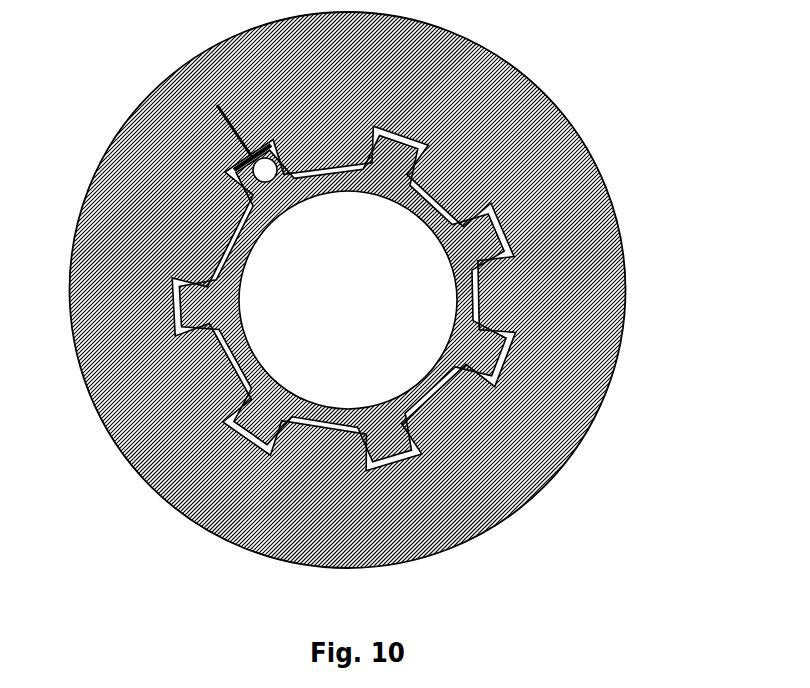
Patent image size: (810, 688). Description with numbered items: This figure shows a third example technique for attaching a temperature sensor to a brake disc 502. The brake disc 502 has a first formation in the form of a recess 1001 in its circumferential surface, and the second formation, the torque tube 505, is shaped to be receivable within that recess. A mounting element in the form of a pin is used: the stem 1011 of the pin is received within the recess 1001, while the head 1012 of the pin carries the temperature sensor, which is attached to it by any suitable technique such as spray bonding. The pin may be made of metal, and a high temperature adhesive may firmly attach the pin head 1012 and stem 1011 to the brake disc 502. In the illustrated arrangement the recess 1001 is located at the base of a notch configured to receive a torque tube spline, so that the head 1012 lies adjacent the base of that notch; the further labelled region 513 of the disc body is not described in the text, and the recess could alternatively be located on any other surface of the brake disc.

The brake disc 502 is at (540, 135).
The torque tube 505 is at (453, 360).
The recess 1001 is at (515, 238).
The housing portion 513 is at (343, 130).
The stem 1011 is at (233, 140).
The head 1012 is at (254, 169).